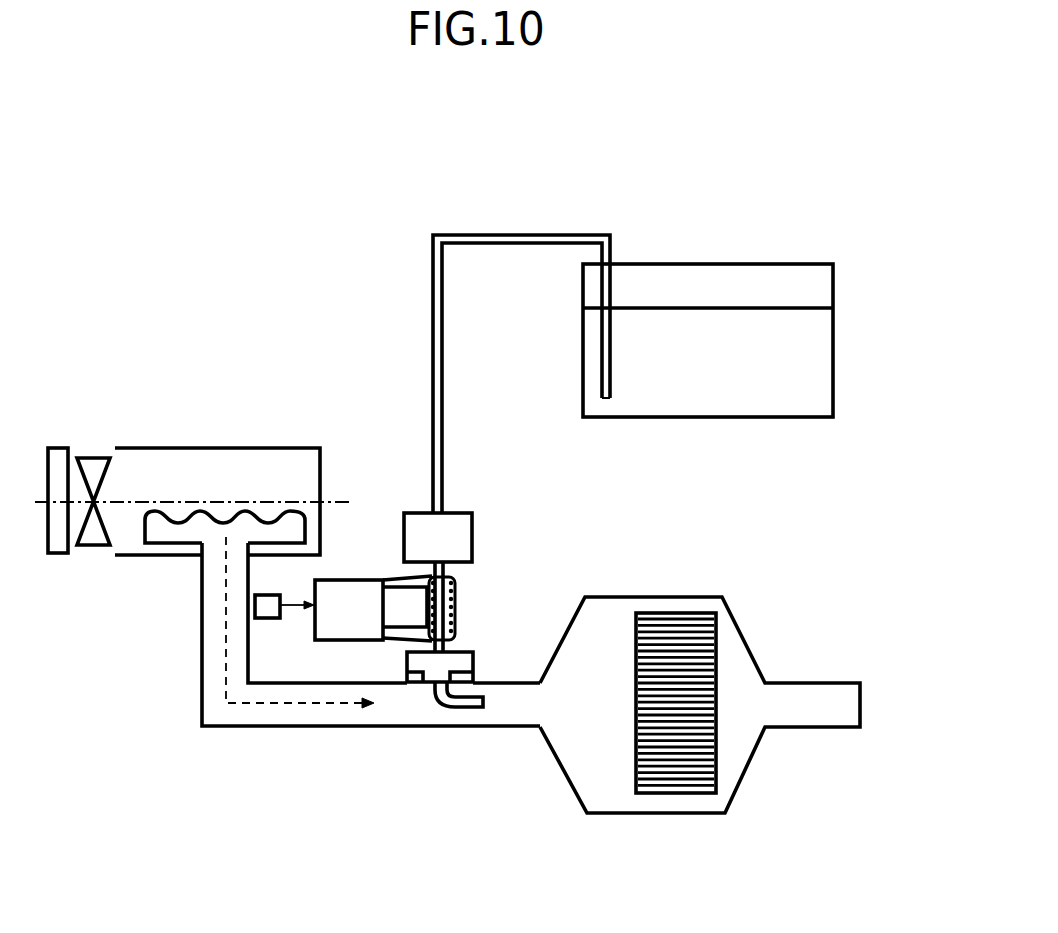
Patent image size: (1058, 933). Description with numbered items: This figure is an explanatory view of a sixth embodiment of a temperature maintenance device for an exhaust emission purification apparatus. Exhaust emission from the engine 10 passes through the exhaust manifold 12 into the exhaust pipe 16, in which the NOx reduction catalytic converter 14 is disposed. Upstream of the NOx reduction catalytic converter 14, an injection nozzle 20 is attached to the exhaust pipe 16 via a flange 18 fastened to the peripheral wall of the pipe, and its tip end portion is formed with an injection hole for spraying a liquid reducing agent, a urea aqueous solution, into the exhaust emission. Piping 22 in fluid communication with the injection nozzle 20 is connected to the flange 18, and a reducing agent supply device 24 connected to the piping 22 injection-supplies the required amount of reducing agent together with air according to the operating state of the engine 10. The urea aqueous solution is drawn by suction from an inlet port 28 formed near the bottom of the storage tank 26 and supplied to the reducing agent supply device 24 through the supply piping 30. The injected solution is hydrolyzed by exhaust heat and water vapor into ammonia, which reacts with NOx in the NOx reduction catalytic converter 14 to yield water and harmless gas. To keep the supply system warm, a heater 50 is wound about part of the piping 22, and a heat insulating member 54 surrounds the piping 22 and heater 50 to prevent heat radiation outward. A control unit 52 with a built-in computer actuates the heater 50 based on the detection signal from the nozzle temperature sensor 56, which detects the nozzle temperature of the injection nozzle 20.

The engine 10 is at (297, 447).
The exhaust manifold 12 is at (150, 547).
The NOx reduction catalytic converter 14 is at (690, 626).
The exhaust pipe 16 is at (330, 727).
The flange 18 is at (473, 657).
The injection nozzle 20 is at (465, 708).
The piping 22 is at (447, 571).
The reducing agent supply device 24 is at (462, 513).
The storage tank 26 is at (833, 280).
The inlet port 28 is at (595, 398).
The supply piping 30 is at (512, 235).
The heater 50 is at (452, 606).
The control unit 52 is at (348, 580).
The heat insulating member 54 is at (455, 636).
The nozzle temperature sensor 56 is at (268, 620).